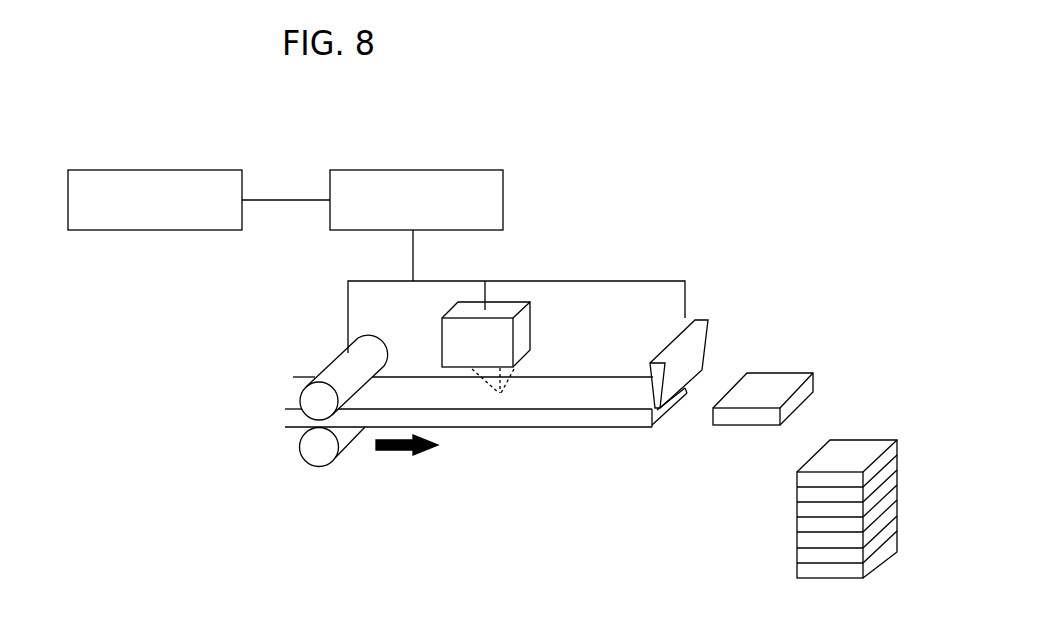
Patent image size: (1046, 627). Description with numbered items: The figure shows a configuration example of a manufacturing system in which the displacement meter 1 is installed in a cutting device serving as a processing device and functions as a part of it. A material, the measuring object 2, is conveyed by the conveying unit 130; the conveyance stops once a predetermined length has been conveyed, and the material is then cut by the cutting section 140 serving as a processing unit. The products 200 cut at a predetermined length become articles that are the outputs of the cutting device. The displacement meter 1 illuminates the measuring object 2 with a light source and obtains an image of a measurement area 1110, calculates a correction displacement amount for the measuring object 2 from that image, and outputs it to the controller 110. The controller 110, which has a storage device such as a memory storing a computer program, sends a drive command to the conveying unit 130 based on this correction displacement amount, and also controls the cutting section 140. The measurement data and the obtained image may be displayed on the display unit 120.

The display unit 120 is at (170, 170).
The controller 110 is at (432, 170).
The displacement meter 1 is at (523, 333).
The measurement area 1110 is at (505, 397).
The conveying unit 130 is at (330, 373).
The measuring object 2 is at (552, 427).
The cutting section 140 is at (693, 353).
The products 200 is at (785, 382).